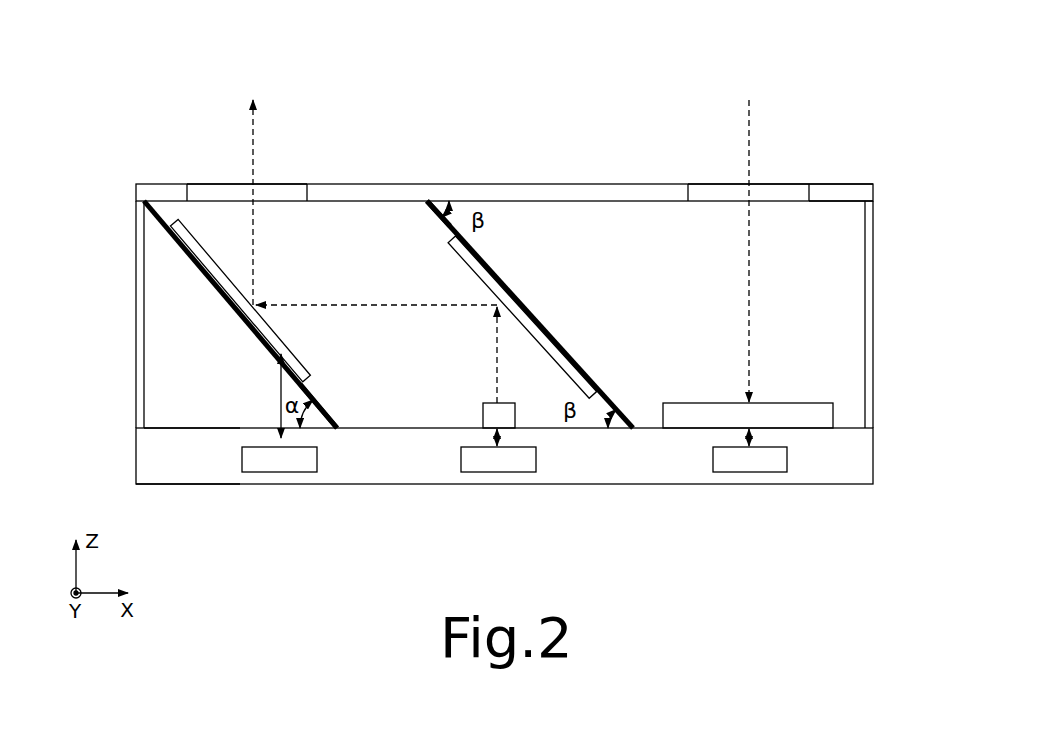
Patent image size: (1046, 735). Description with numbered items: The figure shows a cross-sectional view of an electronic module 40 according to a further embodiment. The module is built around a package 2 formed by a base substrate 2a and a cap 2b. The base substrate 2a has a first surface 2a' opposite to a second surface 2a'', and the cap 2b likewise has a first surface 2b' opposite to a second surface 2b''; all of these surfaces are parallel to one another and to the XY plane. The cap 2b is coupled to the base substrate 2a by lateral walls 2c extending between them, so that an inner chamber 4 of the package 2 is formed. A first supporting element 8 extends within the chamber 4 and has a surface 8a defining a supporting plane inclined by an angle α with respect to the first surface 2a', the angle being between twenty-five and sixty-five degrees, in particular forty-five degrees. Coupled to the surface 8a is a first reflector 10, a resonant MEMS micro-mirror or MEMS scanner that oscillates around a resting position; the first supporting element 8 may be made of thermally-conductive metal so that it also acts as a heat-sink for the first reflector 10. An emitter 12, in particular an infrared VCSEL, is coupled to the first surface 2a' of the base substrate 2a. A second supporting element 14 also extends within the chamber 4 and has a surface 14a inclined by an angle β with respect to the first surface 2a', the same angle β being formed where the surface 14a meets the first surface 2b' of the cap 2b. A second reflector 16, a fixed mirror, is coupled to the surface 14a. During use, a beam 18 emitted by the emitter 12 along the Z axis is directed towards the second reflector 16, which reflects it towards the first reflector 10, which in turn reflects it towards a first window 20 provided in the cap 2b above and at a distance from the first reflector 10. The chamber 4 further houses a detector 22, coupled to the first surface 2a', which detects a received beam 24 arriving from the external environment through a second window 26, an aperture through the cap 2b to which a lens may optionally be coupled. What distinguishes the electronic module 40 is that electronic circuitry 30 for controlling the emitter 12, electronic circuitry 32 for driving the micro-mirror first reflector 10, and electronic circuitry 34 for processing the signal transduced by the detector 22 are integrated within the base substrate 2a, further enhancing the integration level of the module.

The electronic module 40 is at (150, 89).
The package 2 is at (134, 272).
The base substrate 2a is at (463, 456).
The first surface of the base substrate 2a' is at (155, 404).
The second surface of the base substrate 2a'' is at (187, 513).
The cap 2b is at (493, 156).
The first surface of the cap 2b' is at (875, 221).
The second surface of the cap 2b'' is at (868, 164).
The lateral walls 2c is at (140, 316).
The inner chamber 4 is at (800, 338).
The first supporting element 8 is at (268, 350).
The surface of the first supporting element 8a is at (337, 412).
The first reflector 10 is at (302, 372).
The emitter 12 is at (483, 413).
The second supporting element 14 is at (510, 287).
The surface of the second supporting element 14a is at (428, 216).
The second reflector 16 is at (487, 283).
The beam 18 is at (497, 340).
The first window 20 is at (205, 184).
The detector 22 is at (695, 415).
The received beam 24 is at (746, 147).
The second window 26 is at (785, 193).
The electronic circuitry for controlling the emitter 30 is at (497, 465).
The electronic circuitry for driving the micro-mirror 32 is at (283, 463).
The electronic circuitry for processing the detector signal 34 is at (745, 465).